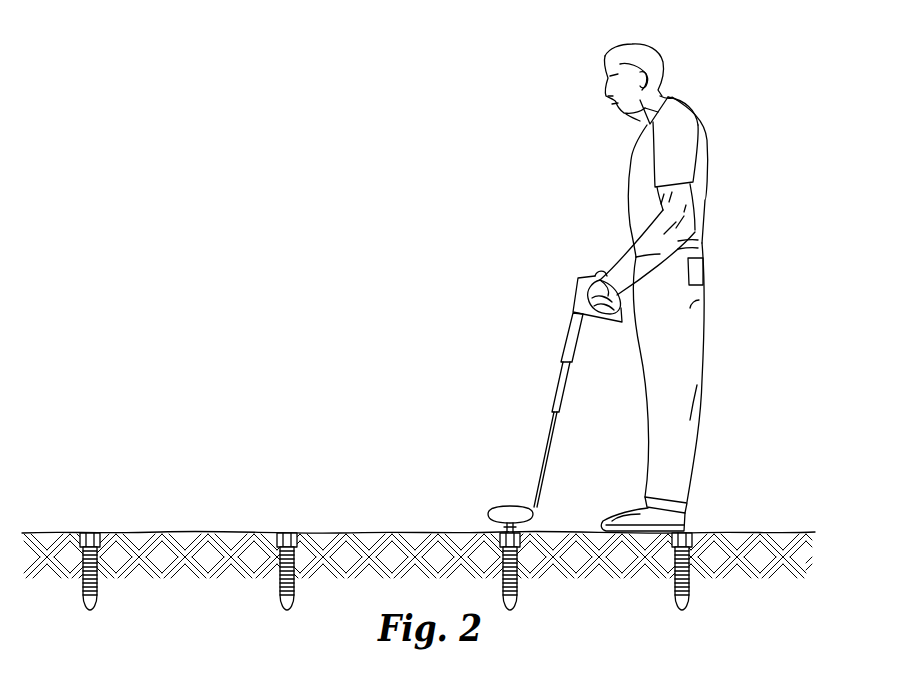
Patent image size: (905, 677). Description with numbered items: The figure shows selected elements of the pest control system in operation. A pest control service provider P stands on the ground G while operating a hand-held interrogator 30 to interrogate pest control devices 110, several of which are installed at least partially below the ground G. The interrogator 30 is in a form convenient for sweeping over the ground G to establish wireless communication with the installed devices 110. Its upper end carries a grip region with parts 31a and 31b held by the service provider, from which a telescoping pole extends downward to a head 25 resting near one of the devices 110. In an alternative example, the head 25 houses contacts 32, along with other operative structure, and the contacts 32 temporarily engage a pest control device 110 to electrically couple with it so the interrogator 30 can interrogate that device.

The pest control service provider P is at (707, 148).
The ground G is at (207, 532).
The pest control devices 110 is at (98, 580).
The interrogator 30 is at (557, 385).
The handle grip button 31a is at (601, 271).
The handle grip housing 31b is at (576, 280).
The head 25 is at (508, 507).
The contacts 32 is at (492, 524).